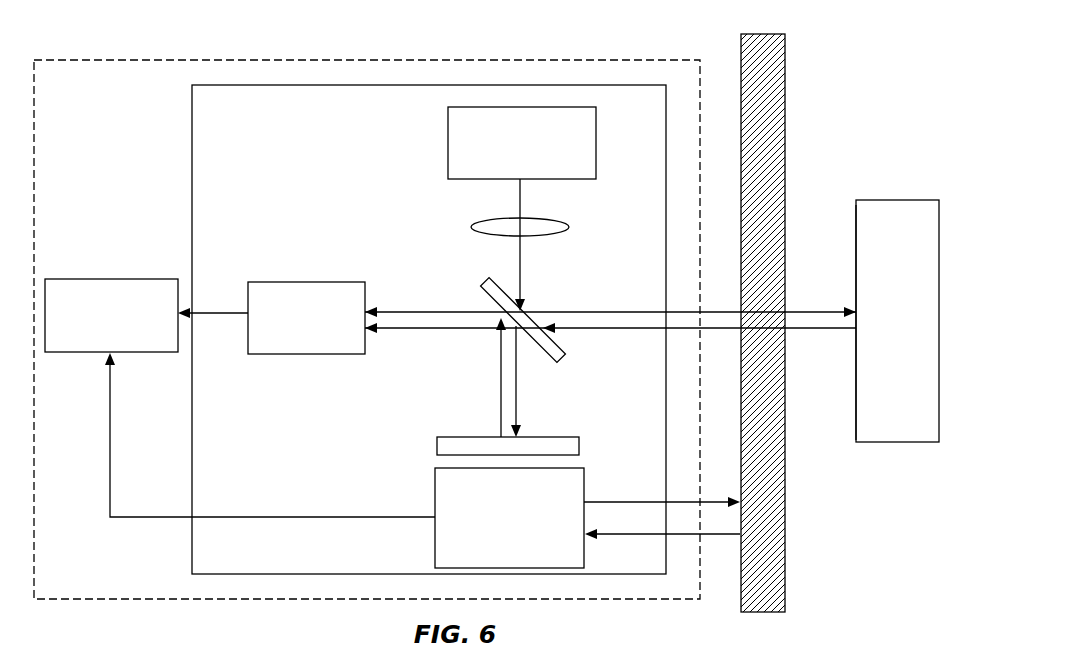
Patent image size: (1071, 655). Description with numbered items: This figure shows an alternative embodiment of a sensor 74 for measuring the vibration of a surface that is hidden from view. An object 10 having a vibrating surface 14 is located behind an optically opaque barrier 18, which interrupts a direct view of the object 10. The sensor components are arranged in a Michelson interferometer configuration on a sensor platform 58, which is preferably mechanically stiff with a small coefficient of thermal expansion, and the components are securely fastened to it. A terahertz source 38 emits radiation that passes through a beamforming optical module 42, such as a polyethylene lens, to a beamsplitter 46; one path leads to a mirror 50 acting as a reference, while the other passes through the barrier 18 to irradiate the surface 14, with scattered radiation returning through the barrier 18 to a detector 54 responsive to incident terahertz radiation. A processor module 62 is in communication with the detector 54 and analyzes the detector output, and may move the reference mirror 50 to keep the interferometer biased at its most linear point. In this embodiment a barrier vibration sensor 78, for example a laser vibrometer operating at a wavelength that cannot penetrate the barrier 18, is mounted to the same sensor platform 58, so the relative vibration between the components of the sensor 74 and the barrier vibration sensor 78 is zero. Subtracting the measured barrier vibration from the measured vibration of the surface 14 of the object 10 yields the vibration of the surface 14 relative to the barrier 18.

The object 10 is at (897, 321).
The vibrating surface 14 is at (843, 220).
The barrier 18 is at (785, 75).
The terahertz source 38 is at (522, 143).
The beamforming optical module 42 is at (556, 232).
The beamsplitter 46 is at (548, 362).
The mirror 50 is at (437, 443).
The detector 54 is at (306, 318).
The sensor platform 58 is at (429, 329).
The processor module 62 is at (111, 315).
The sensor 74 is at (218, 60).
The barrier vibration sensor 78 is at (509, 518).